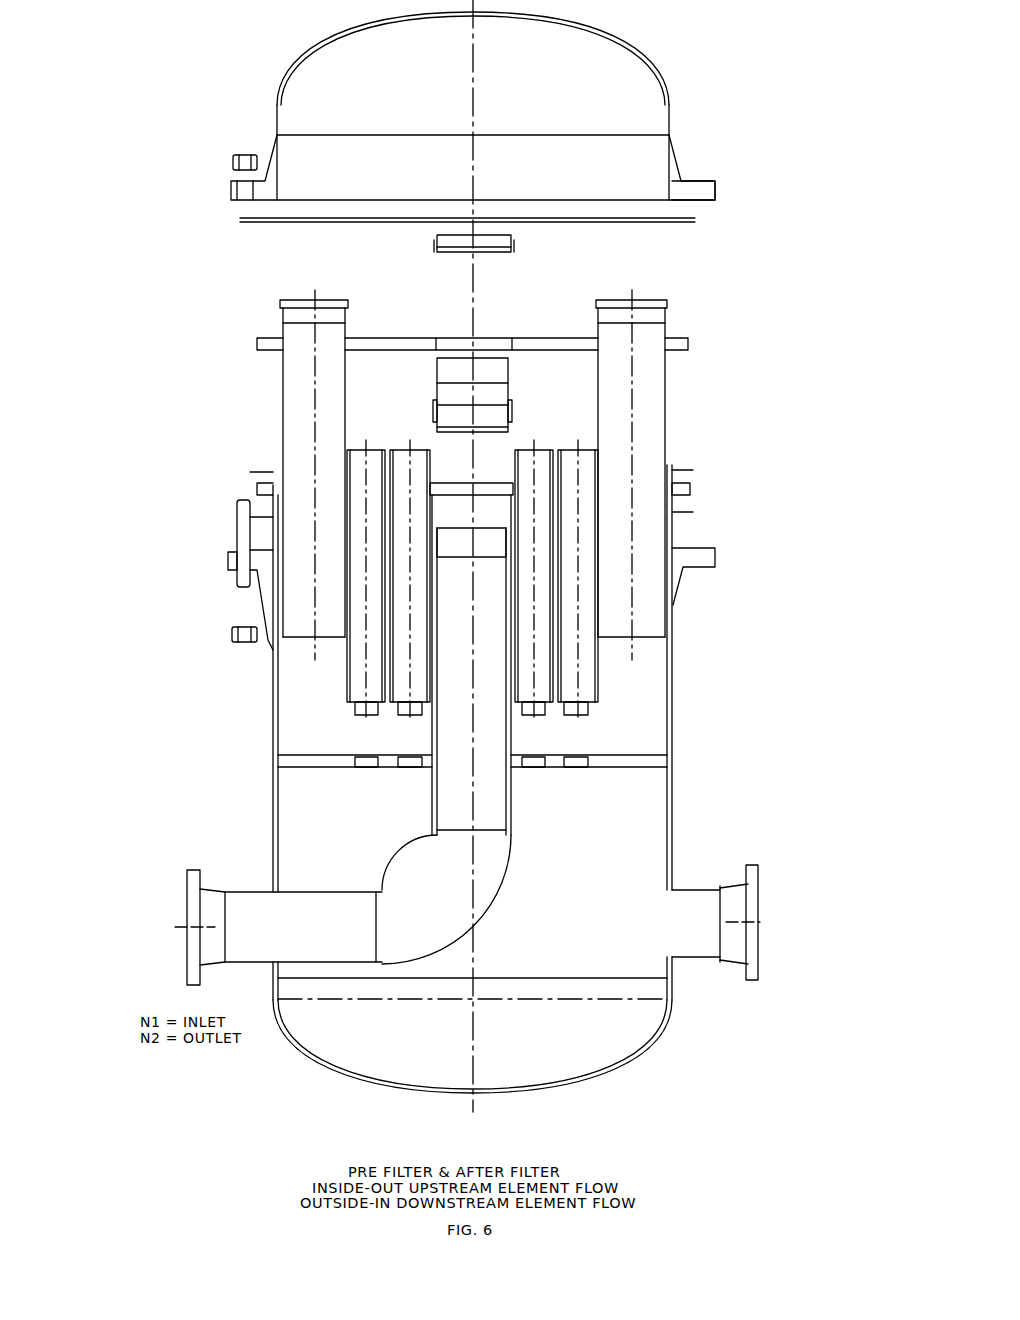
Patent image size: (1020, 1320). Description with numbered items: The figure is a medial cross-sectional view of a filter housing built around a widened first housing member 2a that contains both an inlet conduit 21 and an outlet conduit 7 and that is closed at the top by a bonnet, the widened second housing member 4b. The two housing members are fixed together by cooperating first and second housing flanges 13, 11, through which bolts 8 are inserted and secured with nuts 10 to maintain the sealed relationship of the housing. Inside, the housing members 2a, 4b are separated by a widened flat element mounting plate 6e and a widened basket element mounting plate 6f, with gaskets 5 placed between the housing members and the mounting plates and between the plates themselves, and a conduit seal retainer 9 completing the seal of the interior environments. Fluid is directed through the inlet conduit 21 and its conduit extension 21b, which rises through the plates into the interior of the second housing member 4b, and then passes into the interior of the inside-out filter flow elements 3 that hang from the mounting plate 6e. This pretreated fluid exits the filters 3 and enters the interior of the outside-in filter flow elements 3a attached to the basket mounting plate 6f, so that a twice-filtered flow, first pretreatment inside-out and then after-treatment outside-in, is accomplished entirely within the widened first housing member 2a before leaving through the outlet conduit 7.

The widened second housing member 4b is at (280, 90).
The nut 10 is at (229, 160).
The gasket 5 is at (240, 221).
The second housing flange 11 is at (720, 181).
The conduit seal retainer 9 is at (520, 238).
The inside-out filter flow element 3 is at (280, 300).
The widened flat mounting plate 6e is at (255, 340).
The conduit extension 21b is at (512, 372).
The widened basket mounting plate 6f is at (252, 486).
The bolt 8 is at (232, 577).
The first housing flange 13 is at (721, 569).
The outside-in filter flow element 3a is at (598, 676).
The widened first housing member 2a is at (272, 800).
The inlet conduit 21 is at (250, 917).
The outlet conduit 7 is at (700, 915).